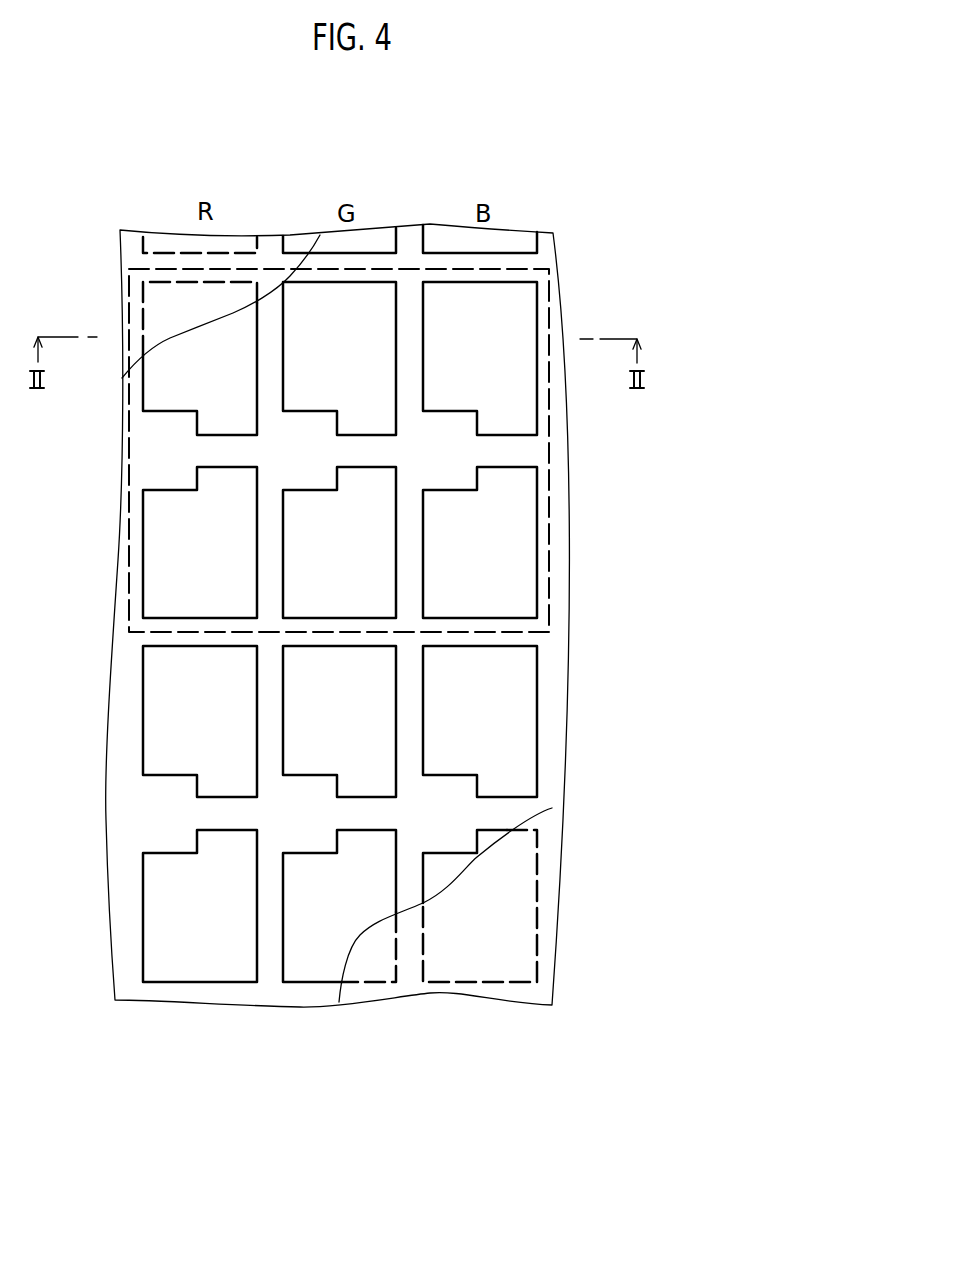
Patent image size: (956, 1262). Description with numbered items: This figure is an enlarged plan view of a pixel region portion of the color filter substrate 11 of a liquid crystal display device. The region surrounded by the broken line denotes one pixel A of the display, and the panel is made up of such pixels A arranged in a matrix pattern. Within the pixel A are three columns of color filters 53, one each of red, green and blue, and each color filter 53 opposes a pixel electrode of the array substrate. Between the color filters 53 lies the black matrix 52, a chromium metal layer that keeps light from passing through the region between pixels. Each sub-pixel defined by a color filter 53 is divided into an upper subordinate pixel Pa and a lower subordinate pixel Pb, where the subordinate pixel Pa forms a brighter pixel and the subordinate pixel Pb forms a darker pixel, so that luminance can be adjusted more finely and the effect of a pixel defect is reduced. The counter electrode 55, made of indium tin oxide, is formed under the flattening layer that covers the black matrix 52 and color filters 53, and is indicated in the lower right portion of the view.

The color filter substrate 11 is at (565, 180).
The black matrix 52 is at (513, 450).
The color filters 53 is at (307, 633).
The counter electrode 55 is at (485, 910).
The pixel A is at (550, 540).
The subordinate pixel Pa is at (158, 390).
The subordinate pixel Pb is at (167, 578).